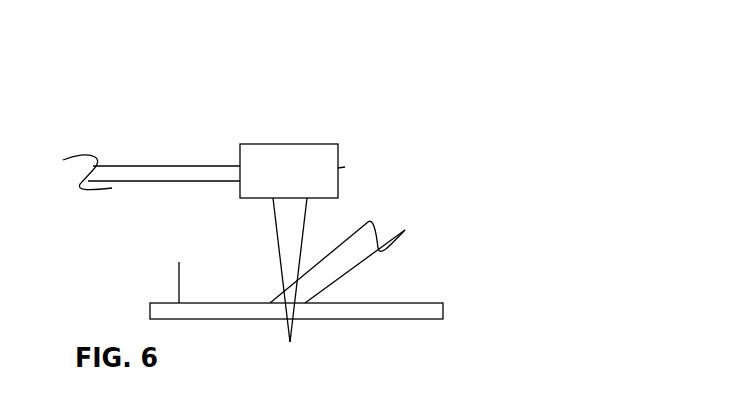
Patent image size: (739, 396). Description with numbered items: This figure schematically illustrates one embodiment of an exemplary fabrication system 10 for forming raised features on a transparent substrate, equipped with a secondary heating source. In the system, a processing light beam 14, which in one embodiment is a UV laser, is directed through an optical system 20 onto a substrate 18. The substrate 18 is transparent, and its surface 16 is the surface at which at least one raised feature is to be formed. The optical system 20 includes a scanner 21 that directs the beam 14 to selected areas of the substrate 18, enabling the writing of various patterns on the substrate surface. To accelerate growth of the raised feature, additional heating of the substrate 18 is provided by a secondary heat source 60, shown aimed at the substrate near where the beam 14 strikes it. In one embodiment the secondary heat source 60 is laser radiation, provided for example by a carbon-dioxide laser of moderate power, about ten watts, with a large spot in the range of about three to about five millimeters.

The fabrication system 10 is at (167, 78).
The processing light beam 14 is at (122, 173).
The surface 16 is at (179, 262).
The substrate 18 is at (424, 298).
The optical system 20 is at (304, 141).
The scanner 21 is at (345, 167).
The secondary heat source 60 is at (352, 259).